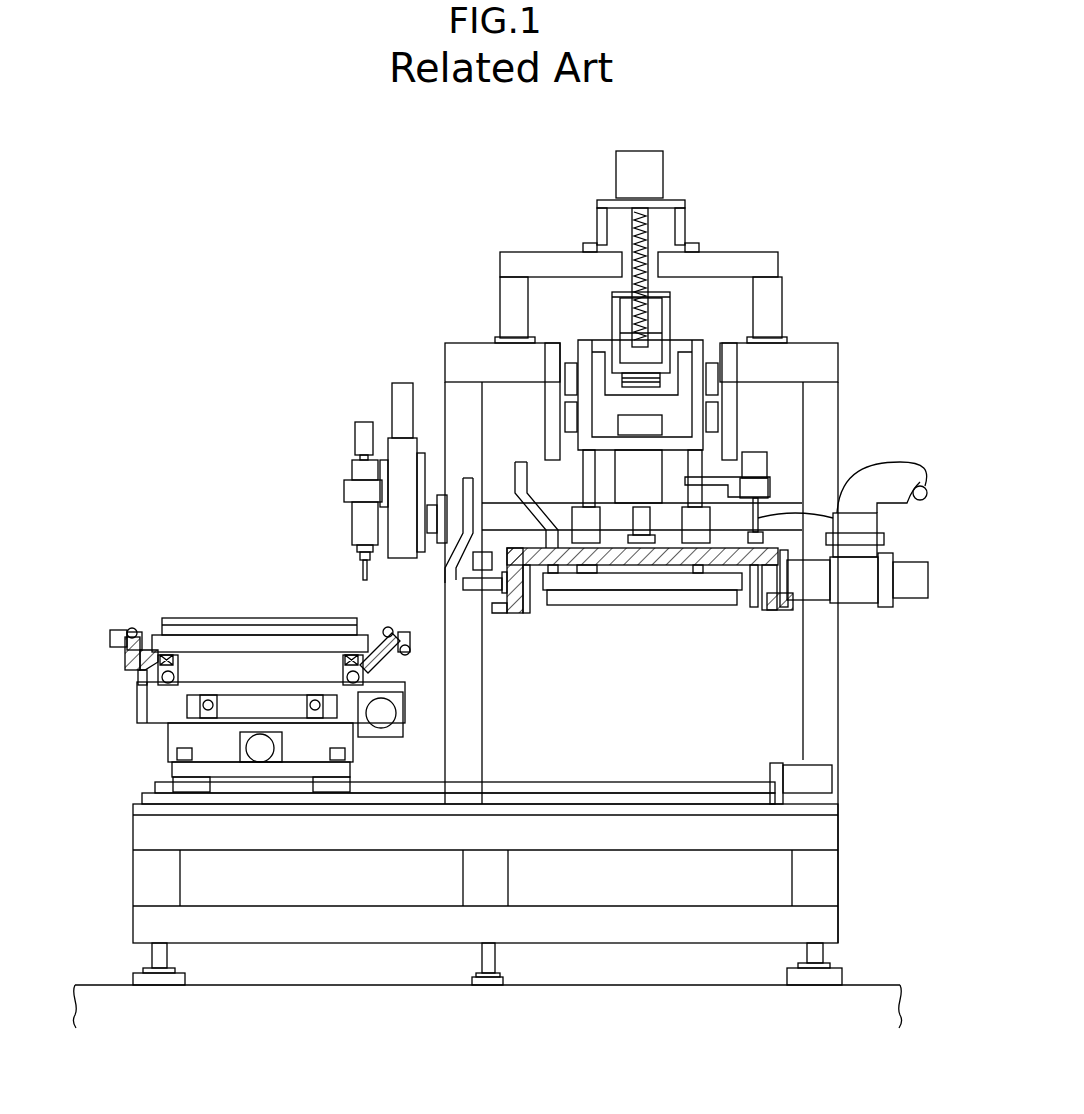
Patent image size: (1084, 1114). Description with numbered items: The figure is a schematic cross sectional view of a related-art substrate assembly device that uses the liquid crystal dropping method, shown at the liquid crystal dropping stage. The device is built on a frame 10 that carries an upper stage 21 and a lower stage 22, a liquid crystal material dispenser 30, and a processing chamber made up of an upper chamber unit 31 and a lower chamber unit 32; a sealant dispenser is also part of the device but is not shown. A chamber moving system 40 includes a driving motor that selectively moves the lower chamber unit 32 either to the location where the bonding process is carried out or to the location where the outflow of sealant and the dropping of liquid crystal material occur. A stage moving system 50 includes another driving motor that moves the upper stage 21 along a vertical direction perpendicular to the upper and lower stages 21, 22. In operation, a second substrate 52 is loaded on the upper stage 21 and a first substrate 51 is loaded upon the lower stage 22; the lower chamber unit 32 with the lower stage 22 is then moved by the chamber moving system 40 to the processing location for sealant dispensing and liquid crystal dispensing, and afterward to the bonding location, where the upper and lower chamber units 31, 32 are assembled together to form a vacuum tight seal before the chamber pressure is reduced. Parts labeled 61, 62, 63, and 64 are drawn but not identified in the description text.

The frame 10 is at (838, 697).
The upper stage 21 is at (645, 583).
The lower stage 22 is at (202, 650).
The liquid crystal material dispenser 30 is at (345, 512).
The upper chamber unit 31 is at (530, 573).
The lower chamber unit 32 is at (127, 672).
The chamber moving system 40 is at (822, 780).
The stage moving system 50 is at (653, 427).
The first substrate 51 is at (252, 618).
The second substrate 52 is at (713, 605).
The hose connector 61 is at (880, 523).
The side bracket 62 is at (752, 607).
The sensor bracket 63 is at (764, 485).
The sensor 64 is at (764, 462).